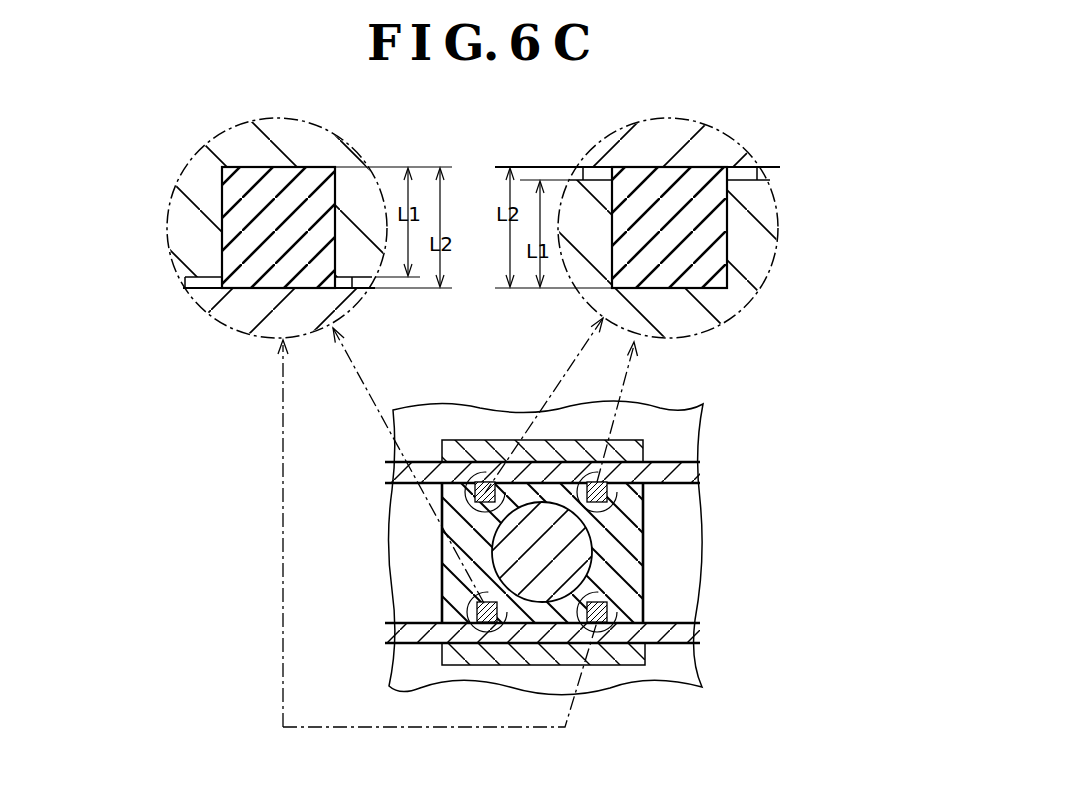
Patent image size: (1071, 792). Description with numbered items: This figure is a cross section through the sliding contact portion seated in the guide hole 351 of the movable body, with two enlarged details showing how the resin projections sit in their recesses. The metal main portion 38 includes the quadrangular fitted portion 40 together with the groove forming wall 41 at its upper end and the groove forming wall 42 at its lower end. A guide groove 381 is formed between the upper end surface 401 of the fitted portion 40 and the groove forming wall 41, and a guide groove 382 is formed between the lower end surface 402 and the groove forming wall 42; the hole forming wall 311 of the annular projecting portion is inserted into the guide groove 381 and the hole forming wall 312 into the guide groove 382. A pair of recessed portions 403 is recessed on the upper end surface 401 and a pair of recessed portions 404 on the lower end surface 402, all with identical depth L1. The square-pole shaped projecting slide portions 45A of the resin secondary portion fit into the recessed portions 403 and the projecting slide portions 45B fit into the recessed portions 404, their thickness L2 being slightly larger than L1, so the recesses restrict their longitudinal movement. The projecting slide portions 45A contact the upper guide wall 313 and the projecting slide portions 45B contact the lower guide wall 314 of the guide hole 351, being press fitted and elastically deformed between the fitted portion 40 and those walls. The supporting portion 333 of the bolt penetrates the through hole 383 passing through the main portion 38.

The main portion 38 is at (643, 547).
The fitted portion 40 is at (450, 568).
The groove forming wall 41 is at (583, 447).
The groove forming wall 42 is at (597, 630).
The projecting slide portion 45A is at (480, 478).
The projecting slide portion 45B is at (477, 623).
The hole forming wall 311 is at (673, 470).
The hole forming wall 312 is at (683, 628).
The upper guide wall 313 is at (665, 167).
The lower guide wall 314 is at (257, 289).
The supporting portion 333 is at (575, 560).
The guide hole 351 is at (397, 552).
The guide groove 381 is at (757, 167).
The guide groove 382 is at (200, 303).
The through hole 383 is at (650, 530).
The upper end surface 401 is at (590, 177).
The lower end surface 402 is at (353, 292).
The recessed portion 403 is at (680, 288).
The recessed portion 404 is at (267, 167).